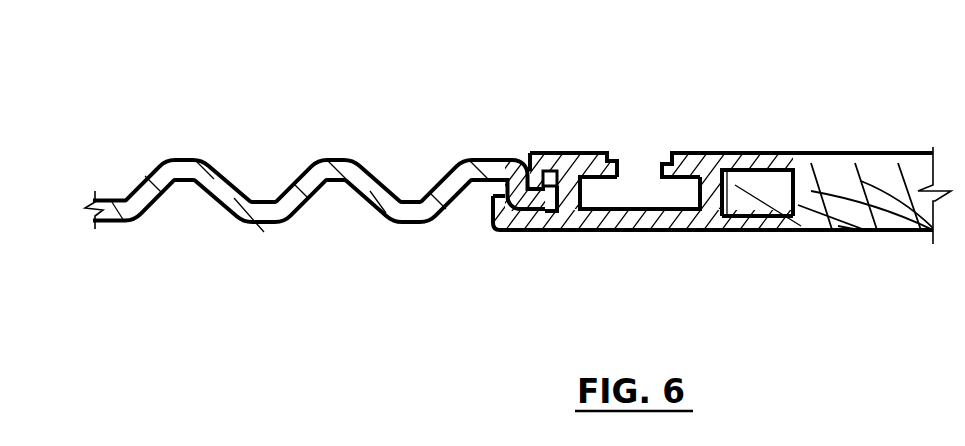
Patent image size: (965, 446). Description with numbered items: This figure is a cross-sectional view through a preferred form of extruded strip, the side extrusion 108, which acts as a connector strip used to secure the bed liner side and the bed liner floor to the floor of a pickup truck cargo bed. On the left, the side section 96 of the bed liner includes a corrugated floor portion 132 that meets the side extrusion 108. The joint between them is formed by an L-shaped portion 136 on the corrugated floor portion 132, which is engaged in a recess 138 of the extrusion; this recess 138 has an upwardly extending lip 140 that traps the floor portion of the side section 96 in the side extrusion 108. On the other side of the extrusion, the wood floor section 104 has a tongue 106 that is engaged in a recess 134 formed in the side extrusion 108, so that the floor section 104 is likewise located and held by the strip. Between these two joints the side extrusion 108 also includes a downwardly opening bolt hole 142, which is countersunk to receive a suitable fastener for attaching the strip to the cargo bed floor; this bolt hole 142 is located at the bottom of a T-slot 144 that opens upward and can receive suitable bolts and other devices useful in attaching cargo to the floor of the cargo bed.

The side section 96 is at (206, 124).
The floor section 104 is at (892, 193).
The tongue 106 is at (766, 201).
The side extrusion 108 is at (742, 113).
The corrugated floor portion 132 is at (264, 234).
The recess 134 is at (776, 222).
The L-shaped portion 136 is at (530, 198).
The recess 138 is at (553, 176).
The upwardly extending lip 140 is at (498, 209).
The bolt hole 142 is at (633, 235).
The T-slot 144 is at (645, 190).